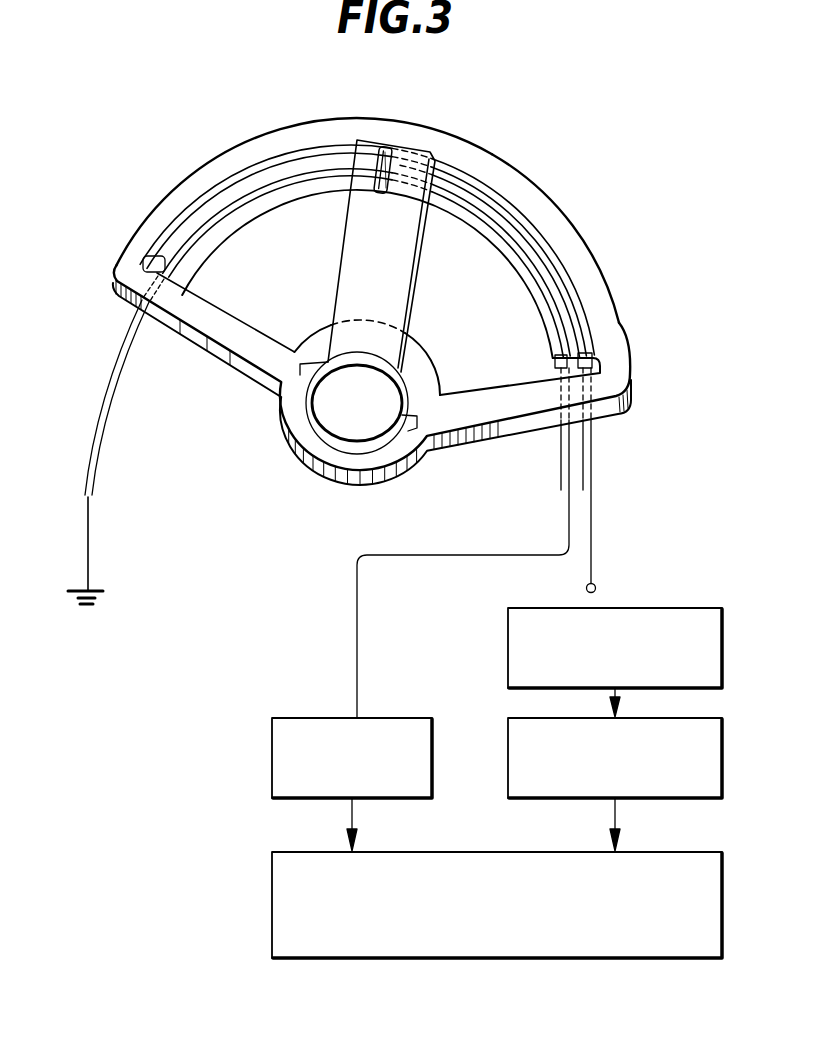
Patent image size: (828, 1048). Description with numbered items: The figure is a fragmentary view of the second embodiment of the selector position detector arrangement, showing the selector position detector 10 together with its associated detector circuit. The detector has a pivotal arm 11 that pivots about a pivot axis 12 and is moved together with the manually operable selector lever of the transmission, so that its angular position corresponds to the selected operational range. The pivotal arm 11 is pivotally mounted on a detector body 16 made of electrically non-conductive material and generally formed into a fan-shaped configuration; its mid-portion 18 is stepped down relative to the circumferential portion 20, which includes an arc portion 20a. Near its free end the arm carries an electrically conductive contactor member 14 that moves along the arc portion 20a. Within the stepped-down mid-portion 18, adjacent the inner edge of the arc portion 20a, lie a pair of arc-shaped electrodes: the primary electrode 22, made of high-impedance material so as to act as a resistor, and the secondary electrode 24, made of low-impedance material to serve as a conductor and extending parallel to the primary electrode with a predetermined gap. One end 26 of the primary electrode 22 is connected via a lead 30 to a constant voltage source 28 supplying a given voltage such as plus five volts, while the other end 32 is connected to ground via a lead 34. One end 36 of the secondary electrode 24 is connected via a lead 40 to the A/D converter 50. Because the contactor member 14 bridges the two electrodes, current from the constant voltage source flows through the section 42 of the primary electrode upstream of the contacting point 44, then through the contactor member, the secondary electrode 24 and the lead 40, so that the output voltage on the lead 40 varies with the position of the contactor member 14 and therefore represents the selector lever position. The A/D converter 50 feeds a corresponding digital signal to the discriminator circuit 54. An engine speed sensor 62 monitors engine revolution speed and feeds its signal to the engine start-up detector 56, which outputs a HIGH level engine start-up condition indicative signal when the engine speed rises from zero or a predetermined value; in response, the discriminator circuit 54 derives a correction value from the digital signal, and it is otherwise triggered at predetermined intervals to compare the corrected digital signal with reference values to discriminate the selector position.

The selector position detector 10 is at (502, 154).
The pivotal arm 11 is at (396, 284).
The pivot axis 12 is at (355, 378).
The contactor member 14 is at (378, 150).
The detector body 16 is at (293, 126).
The mid-portion 18 is at (247, 313).
The circumferential portion 20 is at (626, 320).
The arc portion 20a is at (520, 178).
The primary electrode 22 is at (528, 233).
The secondary electrode 24 is at (541, 293).
The one end of the primary electrode 26 is at (600, 360).
The constant voltage source 28 is at (586, 588).
The lead 30 is at (593, 456).
The other end of the primary electrode 32 is at (160, 266).
The lead 34 is at (107, 388).
The one end of the secondary electrode 36 is at (555, 361).
The lead 40 is at (560, 458).
The section 42 is at (543, 252).
The contacting point 44 is at (391, 165).
The A/D converter 50 is at (300, 702).
The discriminator circuit 54 is at (280, 851).
The engine start-up detector 56 is at (508, 718).
The engine speed sensor 62 is at (686, 608).